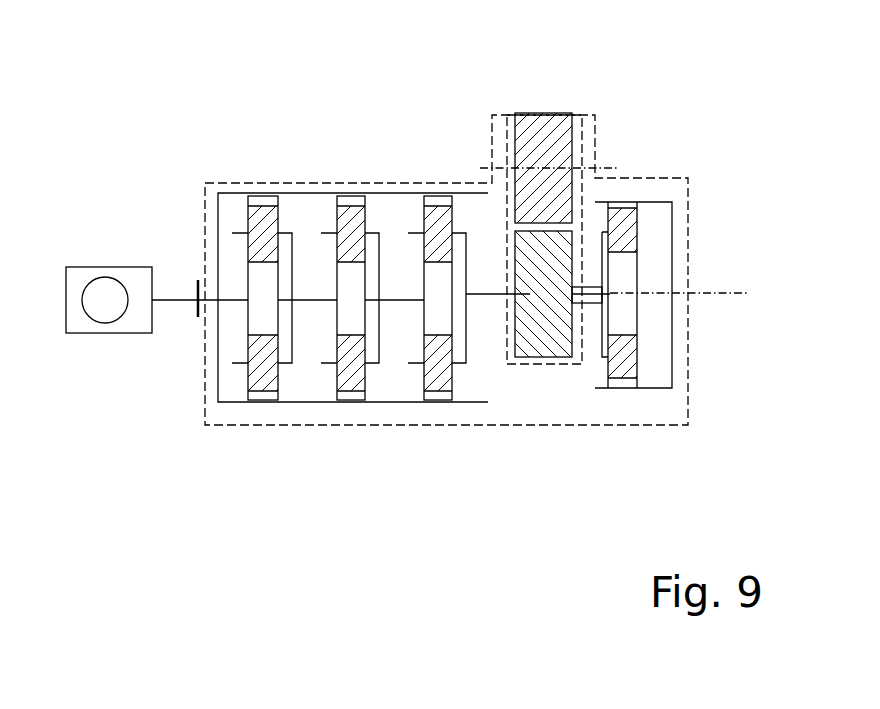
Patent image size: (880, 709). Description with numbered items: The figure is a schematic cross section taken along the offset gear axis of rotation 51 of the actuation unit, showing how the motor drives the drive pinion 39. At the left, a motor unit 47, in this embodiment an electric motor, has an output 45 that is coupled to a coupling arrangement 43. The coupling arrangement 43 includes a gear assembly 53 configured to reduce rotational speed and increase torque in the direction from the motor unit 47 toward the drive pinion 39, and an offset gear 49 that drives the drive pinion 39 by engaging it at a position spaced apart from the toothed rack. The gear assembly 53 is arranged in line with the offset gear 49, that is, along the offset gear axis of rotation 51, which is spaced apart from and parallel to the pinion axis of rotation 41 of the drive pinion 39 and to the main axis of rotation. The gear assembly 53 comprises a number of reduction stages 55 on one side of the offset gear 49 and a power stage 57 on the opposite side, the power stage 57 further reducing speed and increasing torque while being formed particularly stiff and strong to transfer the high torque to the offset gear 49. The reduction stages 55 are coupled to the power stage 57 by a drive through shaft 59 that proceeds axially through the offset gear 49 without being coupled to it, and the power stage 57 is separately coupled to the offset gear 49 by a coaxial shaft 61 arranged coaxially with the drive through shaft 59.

The drive pinion 39 is at (547, 122).
The pinion axis of rotation 41 is at (612, 168).
The coupling arrangement 43 is at (348, 168).
The output 45 is at (175, 298).
The motor unit 47 is at (78, 322).
The offset gear 49 is at (530, 342).
The offset gear axis of rotation 51 is at (723, 292).
The gear assembly 53 is at (418, 425).
The reduction stages 55 is at (382, 402).
The power stage 57 is at (658, 388).
The drive through shaft 59 is at (525, 295).
The coaxial shaft 61 is at (592, 303).